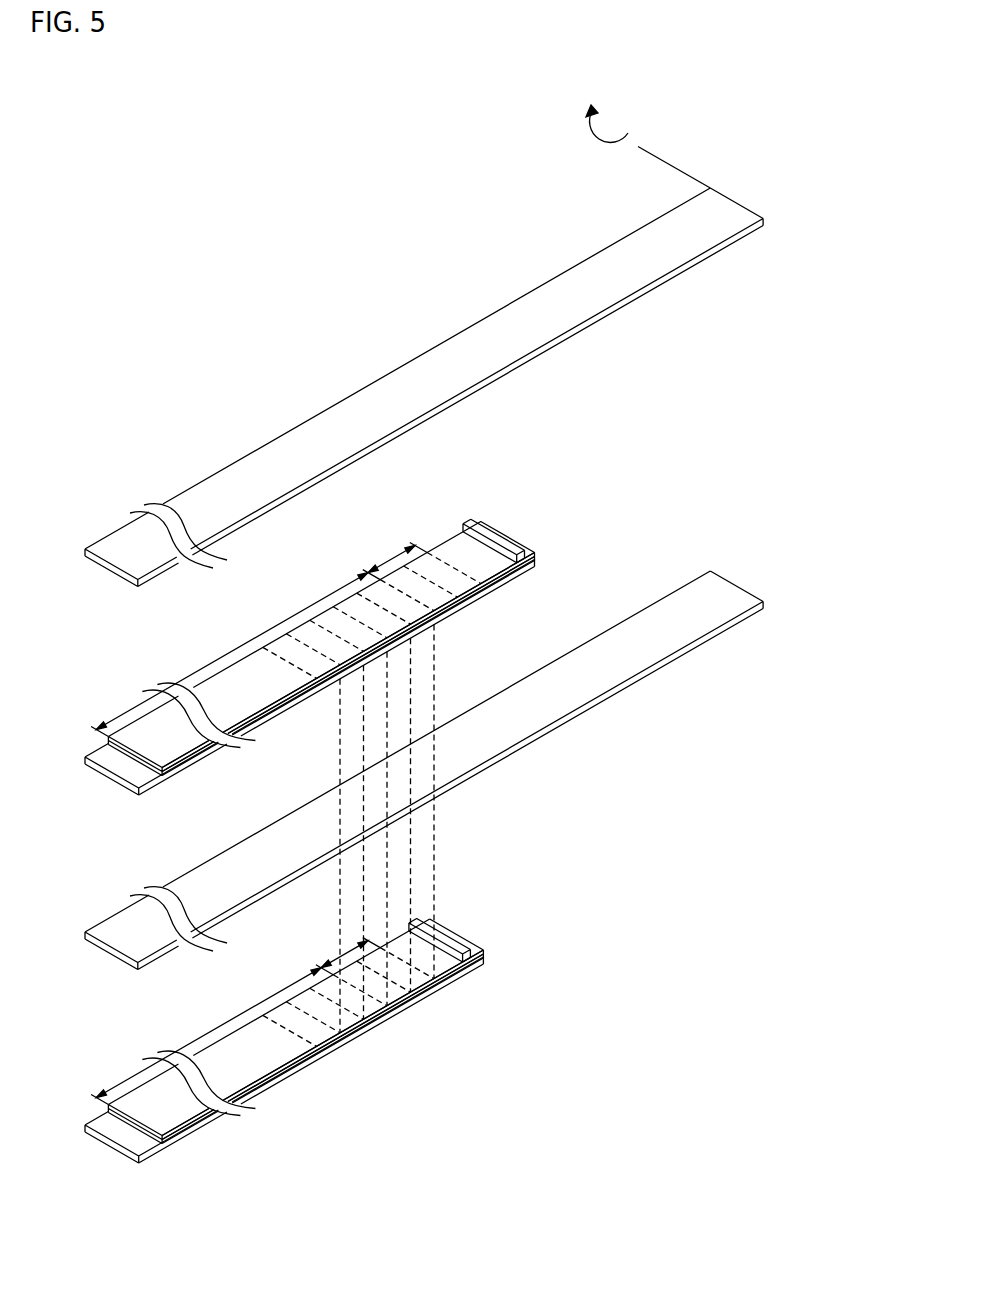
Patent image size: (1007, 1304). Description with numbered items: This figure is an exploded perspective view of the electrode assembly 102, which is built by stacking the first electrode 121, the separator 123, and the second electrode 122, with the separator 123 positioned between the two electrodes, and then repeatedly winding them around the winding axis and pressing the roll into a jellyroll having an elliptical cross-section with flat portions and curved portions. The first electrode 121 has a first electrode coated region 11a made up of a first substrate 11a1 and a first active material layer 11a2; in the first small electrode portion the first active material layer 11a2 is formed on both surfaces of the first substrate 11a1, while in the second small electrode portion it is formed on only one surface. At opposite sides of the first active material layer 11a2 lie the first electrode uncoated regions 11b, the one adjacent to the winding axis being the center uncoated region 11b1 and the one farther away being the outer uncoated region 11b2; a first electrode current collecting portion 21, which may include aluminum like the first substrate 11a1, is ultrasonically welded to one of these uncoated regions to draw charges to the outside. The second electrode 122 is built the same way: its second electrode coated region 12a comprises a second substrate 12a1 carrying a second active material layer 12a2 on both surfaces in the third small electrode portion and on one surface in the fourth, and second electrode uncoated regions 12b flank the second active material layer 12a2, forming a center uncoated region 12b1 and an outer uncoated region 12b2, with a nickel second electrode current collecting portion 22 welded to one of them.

The electrode assembly 102 is at (375, 263).
The separator 123 is at (89, 565).
The second electrode 122 is at (718, 390).
The second electrode uncoated region 12b is at (670, 370).
The outer uncoated region 12b2 is at (85, 764).
The center uncoated region 12b1 is at (530, 557).
The second electrode coated region 12a is at (670, 460).
The second substrate 12a1 is at (500, 579).
The second active material layer 12a2 is at (440, 621).
The second electrode current collecting portion 22 is at (488, 535).
The first electrode 121 is at (625, 913).
The first electrode uncoated region 11b is at (577, 895).
The outer uncoated region 11b2 is at (85, 1126).
The center uncoated region 11b1 is at (478, 955).
The first electrode coated region 11a is at (577, 983).
The first substrate 11a1 is at (450, 975).
The first active material layer 11a2 is at (405, 1009).
The first electrode current collecting portion 21 is at (447, 943).